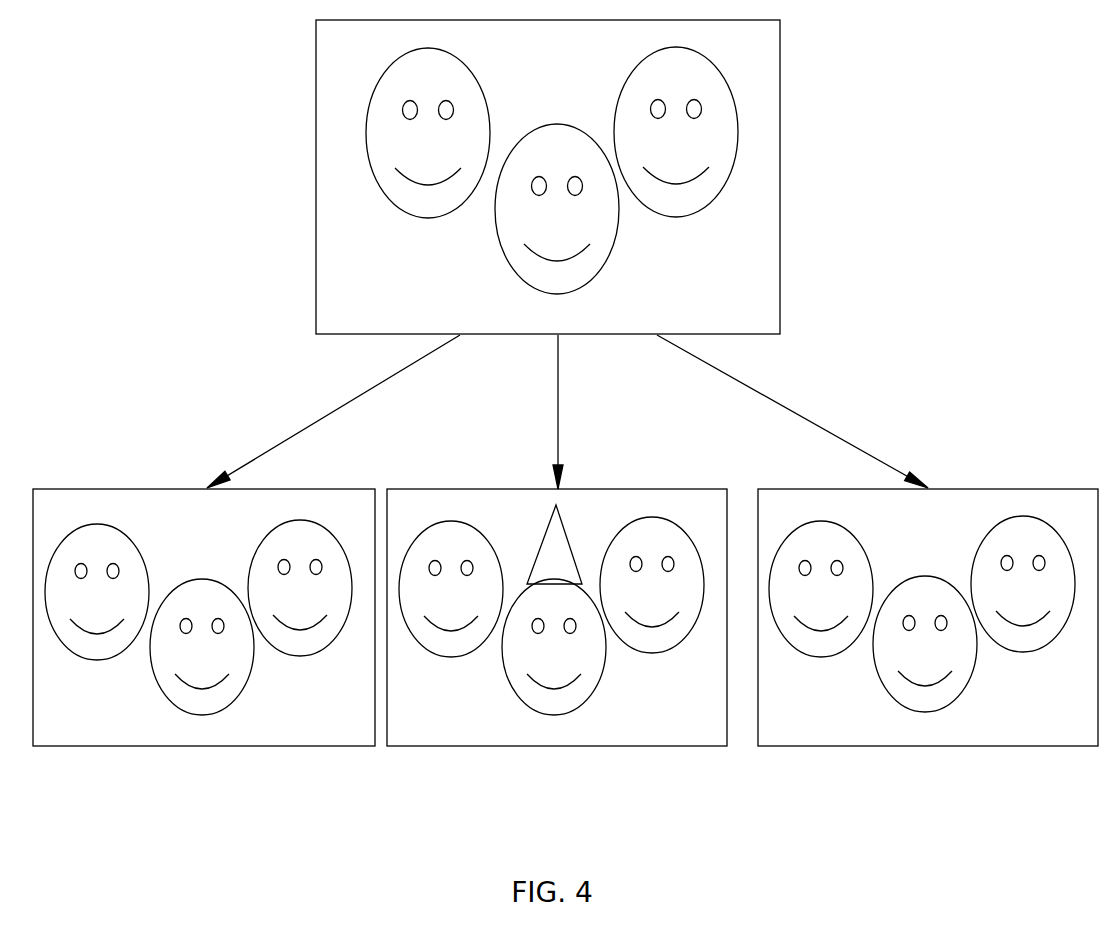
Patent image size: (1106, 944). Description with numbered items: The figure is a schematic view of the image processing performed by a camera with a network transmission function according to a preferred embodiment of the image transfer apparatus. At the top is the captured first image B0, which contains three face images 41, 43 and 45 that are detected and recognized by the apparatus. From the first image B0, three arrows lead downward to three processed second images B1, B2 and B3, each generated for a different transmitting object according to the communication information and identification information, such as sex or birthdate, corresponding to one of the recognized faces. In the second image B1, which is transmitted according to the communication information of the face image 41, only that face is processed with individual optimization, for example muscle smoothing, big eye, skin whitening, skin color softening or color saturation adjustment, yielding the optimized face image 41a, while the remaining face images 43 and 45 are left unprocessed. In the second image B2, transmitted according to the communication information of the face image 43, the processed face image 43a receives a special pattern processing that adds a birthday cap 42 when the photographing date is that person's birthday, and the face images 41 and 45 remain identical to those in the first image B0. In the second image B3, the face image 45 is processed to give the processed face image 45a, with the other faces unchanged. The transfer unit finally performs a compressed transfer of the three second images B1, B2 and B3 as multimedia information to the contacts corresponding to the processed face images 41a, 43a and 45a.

The face image 41 is at (619, 352).
The optimized face image 41a is at (97, 592).
The birthday cap 42 is at (554, 545).
The face image 43 is at (563, 419).
The processed face image 43a is at (554, 647).
The face image 45 is at (493, 351).
The processed face image 45a is at (1023, 584).
The first image B0 is at (768, 175).
The second image B1 is at (213, 737).
The second image B2 is at (567, 737).
The second image B3 is at (938, 737).